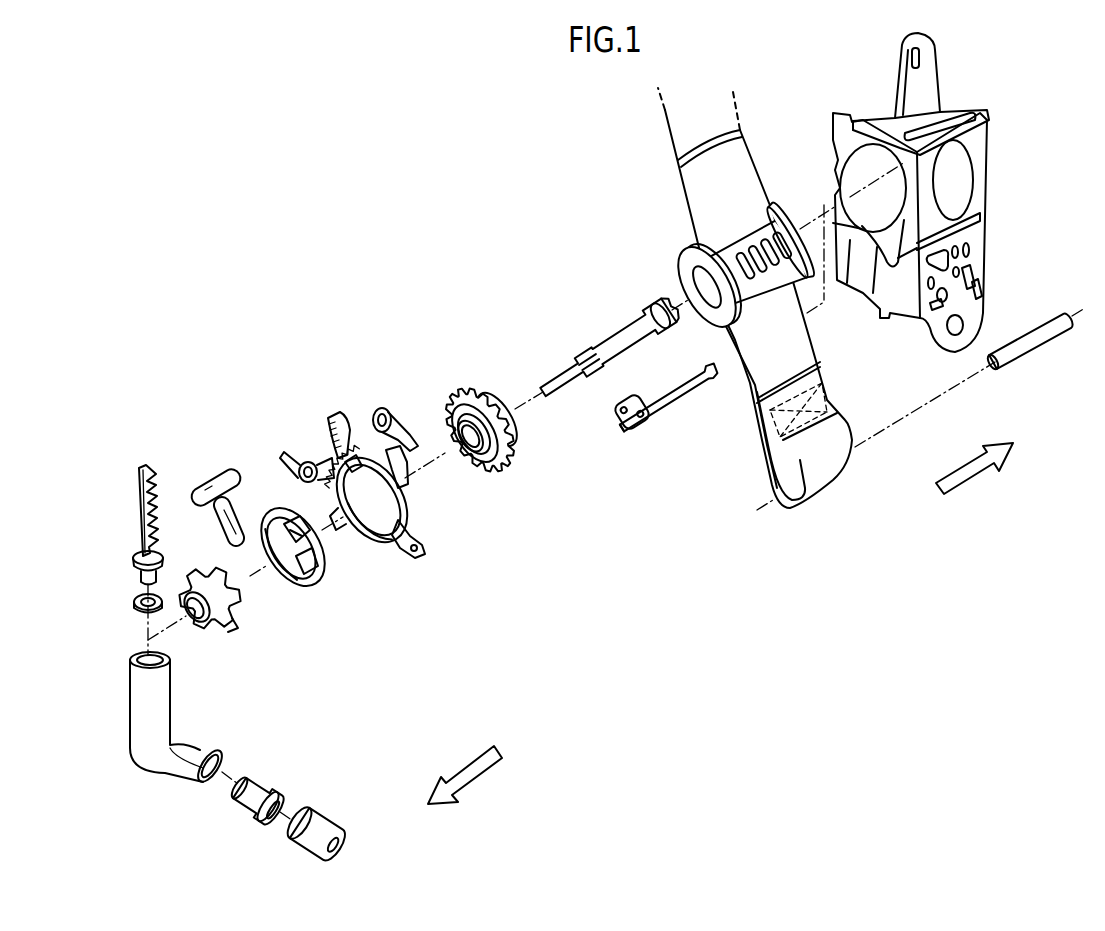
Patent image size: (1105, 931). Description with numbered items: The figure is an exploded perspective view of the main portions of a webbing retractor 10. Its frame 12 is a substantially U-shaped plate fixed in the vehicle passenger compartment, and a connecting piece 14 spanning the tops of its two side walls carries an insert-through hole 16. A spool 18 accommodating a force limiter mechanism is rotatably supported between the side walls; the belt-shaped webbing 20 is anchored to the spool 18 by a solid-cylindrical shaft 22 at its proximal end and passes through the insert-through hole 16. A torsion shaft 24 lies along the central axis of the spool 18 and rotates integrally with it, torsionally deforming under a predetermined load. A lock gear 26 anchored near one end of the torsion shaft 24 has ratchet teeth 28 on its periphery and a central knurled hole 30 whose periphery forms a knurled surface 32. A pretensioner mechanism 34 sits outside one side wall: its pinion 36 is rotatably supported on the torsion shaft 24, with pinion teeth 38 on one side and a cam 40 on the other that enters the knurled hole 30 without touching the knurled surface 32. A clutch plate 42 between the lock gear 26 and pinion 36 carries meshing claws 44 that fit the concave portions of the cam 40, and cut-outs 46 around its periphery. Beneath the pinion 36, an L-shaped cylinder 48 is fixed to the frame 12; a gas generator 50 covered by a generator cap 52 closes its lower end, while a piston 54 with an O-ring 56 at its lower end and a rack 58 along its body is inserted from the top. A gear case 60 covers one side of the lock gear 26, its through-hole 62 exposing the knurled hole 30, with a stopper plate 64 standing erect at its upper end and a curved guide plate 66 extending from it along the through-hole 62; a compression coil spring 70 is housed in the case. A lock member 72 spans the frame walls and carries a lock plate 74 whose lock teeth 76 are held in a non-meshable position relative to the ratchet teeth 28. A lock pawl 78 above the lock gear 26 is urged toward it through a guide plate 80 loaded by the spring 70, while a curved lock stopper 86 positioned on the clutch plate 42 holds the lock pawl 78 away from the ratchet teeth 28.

The webbing retractor 10 is at (302, 284).
The frame 12 is at (980, 230).
The connecting piece 14 is at (930, 60).
The insert-through hole 16 is at (966, 112).
The spool 18 is at (786, 220).
The webbing 20 is at (757, 142).
The shaft 22 is at (1030, 322).
The torsion shaft 24 is at (604, 334).
The lock gear 26 is at (484, 388).
The ratchet teeth 28 is at (518, 436).
The knurled hole 30 is at (453, 420).
The knurled surface 32 is at (488, 462).
The pretensioner mechanism 34 is at (122, 446).
The pinion 36 is at (196, 568).
The pinion teeth 38 is at (226, 634).
The cam 40 is at (240, 606).
The clutch plate 42 is at (280, 504).
The meshing claws 44 is at (300, 522).
The cut-outs 46 is at (316, 566).
The cylinder 48 is at (172, 708).
The gas generator 50 is at (256, 772).
The generator cap 52 is at (324, 806).
The piston 54 is at (134, 506).
The O-ring 56 is at (134, 604).
The rack 58 is at (154, 466).
The gear case 60 is at (344, 400).
The through-hole 62 is at (372, 546).
The stopper plate 64 is at (410, 480).
The guide plate 66 is at (410, 506).
The compression coil spring 70 is at (332, 430).
The lock member 72 is at (700, 408).
The lock plate 74 is at (620, 420).
The lock teeth 76 is at (646, 398).
The lock pawl 78 is at (386, 396).
The guide plate 80 is at (298, 450).
The lock stopper 86 is at (226, 462).